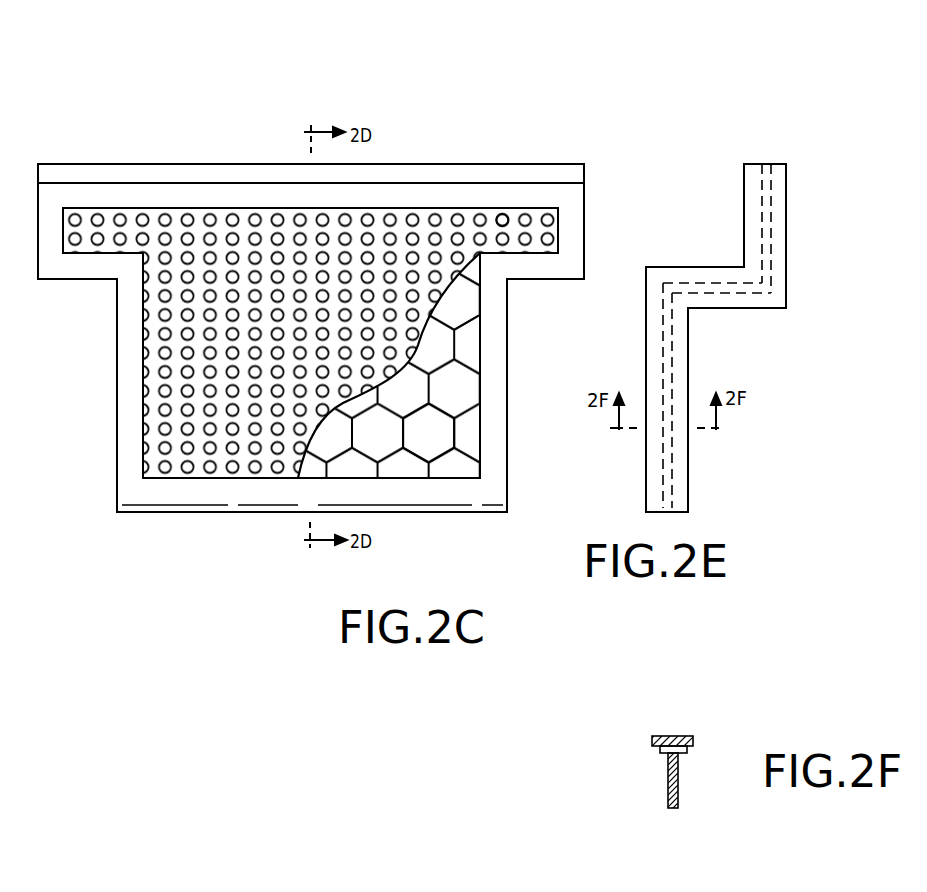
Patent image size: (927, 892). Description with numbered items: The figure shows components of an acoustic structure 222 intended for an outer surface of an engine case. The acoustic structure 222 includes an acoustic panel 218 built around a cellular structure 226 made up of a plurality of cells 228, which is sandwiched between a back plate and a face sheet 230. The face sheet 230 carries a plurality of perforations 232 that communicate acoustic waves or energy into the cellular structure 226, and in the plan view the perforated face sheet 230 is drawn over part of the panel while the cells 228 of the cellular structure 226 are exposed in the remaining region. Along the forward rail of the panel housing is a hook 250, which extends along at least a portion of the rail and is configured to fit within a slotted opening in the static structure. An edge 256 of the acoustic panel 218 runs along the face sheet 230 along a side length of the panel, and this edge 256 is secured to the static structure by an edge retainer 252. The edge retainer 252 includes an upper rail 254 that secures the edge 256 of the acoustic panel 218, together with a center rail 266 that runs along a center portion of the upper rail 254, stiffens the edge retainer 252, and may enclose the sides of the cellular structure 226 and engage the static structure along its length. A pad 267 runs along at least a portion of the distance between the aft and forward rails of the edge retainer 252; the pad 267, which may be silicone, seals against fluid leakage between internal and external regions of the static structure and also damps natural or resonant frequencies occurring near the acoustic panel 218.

In FIG. 2C, the acoustic structure 222 is at (168, 108).
In FIG. 2C, the hook 250 is at (62, 168).
In FIG. 2C, the edge 256 is at (575, 240).
In FIG. 2C, the acoustic panel 218 is at (130, 487).
In FIG. 2C, the face sheet 230 is at (427, 222).
In FIG. 2C, the perforations 232 is at (502, 220).
In FIG. 2C, the cells 228 is at (467, 387).
In FIG. 2C, the cellular structure 226 is at (442, 438).
In FIG. 2E, the edge retainer 252 is at (780, 227).
In FIG. 2F, the edge retainer 252 is at (675, 736).
In FIG. 2E, the upper rail 254 is at (780, 295).
In FIG. 2F, the upper rail 254 is at (652, 743).
In FIG. 2E, the center rail 266 is at (665, 487).
In FIG. 2F, the center rail 266 is at (668, 788).
In FIG. 2F, the pad 267 is at (679, 757).